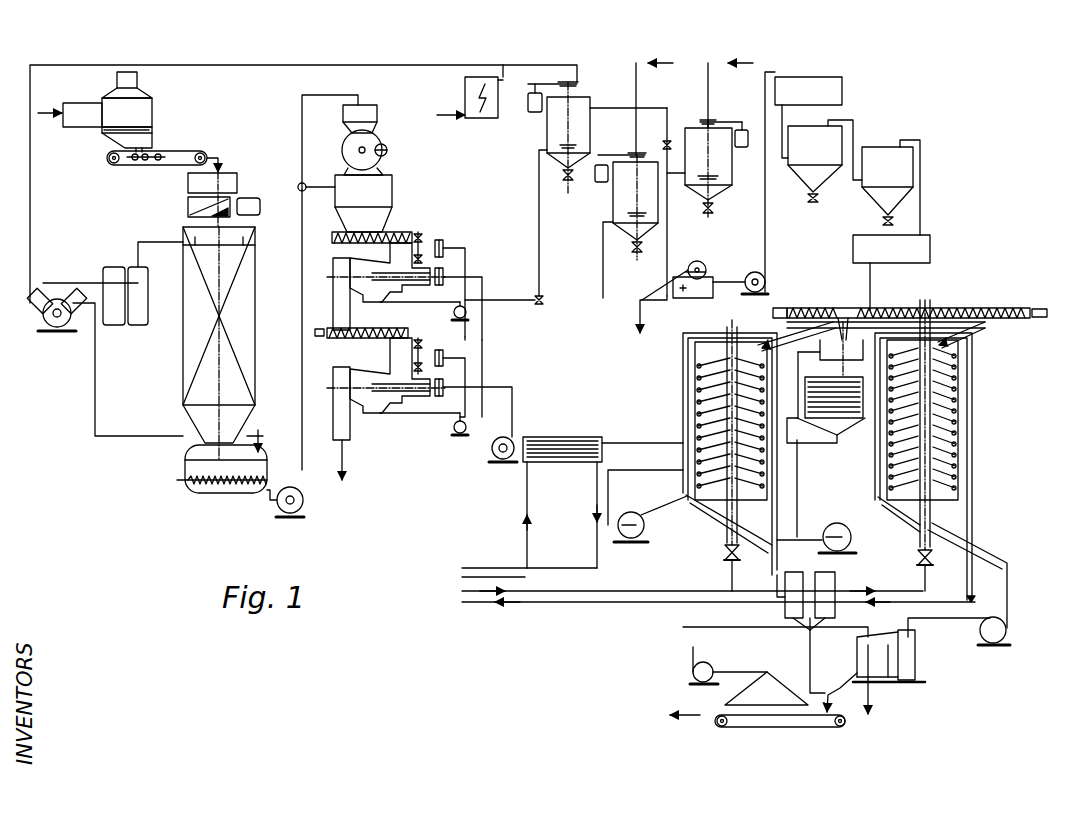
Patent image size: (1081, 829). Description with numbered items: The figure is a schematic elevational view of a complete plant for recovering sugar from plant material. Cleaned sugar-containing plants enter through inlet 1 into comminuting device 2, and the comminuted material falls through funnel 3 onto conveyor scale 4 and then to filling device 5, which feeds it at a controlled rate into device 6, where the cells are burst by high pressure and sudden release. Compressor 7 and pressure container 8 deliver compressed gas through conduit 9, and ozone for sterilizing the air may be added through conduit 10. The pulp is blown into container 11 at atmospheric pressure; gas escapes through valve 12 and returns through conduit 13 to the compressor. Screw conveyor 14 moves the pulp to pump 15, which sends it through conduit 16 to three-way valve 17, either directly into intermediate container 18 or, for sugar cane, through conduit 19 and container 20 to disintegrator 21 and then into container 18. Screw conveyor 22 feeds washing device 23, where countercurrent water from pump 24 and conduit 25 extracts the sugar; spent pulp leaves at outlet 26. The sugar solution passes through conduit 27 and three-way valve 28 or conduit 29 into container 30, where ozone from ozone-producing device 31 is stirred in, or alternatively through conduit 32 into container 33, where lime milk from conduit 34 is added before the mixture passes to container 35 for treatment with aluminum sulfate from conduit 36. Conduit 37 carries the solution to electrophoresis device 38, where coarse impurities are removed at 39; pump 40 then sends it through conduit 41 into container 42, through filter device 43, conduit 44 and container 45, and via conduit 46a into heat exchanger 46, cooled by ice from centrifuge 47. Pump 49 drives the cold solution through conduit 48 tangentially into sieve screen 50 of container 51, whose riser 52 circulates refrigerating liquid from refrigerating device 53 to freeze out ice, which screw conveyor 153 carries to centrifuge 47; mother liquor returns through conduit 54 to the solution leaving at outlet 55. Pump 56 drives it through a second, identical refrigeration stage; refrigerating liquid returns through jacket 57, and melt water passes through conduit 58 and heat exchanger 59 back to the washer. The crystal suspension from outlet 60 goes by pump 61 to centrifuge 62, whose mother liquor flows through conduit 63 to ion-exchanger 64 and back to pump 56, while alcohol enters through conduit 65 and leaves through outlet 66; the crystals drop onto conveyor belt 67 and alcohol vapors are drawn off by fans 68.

The inlet 1 is at (70, 109).
The comminuting device 2 is at (148, 107).
The funnel 3 is at (143, 137).
The conveyor scale 4 is at (152, 166).
The filling device 5 is at (238, 181).
The device for bursting cells 6 is at (244, 345).
The compressor 7 is at (64, 298).
The pressure container 8 is at (148, 305).
The conduit 9 is at (167, 242).
The conduit 10 is at (238, 65).
The container 11 is at (250, 461).
The valve 12 is at (260, 438).
The conduit 13 is at (140, 436).
The screw conveyor 14 is at (245, 488).
The pump 15 is at (303, 502).
The conduit 16 is at (301, 365).
The three-way valve 17 is at (300, 192).
The intermediate container 18 is at (385, 195).
The conduit 19 is at (301, 148).
The container 20 is at (375, 110).
The disintegrator 21 is at (372, 162).
The screw conveyor 22 is at (336, 234).
The washing device 23 is at (336, 306).
The pump 24 is at (491, 453).
The conduit 25 is at (513, 410).
The outlet 26 is at (358, 462).
The conduit 27 is at (513, 300).
The three-way valve 28 is at (540, 306).
The conduit 29 is at (546, 250).
The container 30 is at (547, 131).
The ozone-producing device 31 is at (485, 119).
The conduit 32 is at (604, 272).
The container 33 is at (613, 203).
The conduit 34 is at (638, 86).
The container 35 is at (728, 168).
The conduit 36 is at (710, 88).
The conduit 37 is at (669, 238).
The electrophoresis device 38 is at (678, 300).
The impurity removal outlet 39 is at (640, 318).
The pump 40 is at (766, 284).
The conduit 41 is at (767, 236).
The container 42 is at (810, 80).
The filter device 43 is at (798, 156).
The conduit 44 is at (921, 200).
The container 45 is at (920, 248).
The heat exchanger 46 is at (857, 432).
The conduit 46a is at (872, 289).
The centrifuge 47 is at (820, 348).
The conduit 48 is at (661, 474).
The pump 49 is at (646, 528).
The sieve screen 50 is at (702, 405).
The container 51 is at (762, 335).
The riser 52 is at (700, 378).
The refrigerating device 53 is at (584, 592).
The conduit 54 is at (798, 493).
The outlet 55 is at (787, 524).
The pump 56 is at (852, 538).
The jacket 57 is at (683, 350).
The conduit 58 is at (651, 442).
The heat exchanger 59 is at (556, 437).
The outlet 60 is at (982, 548).
The pump 61 is at (995, 645).
The centrifuge 62 is at (908, 658).
The conduit 63 is at (812, 660).
The ion-exchanger 64 is at (830, 584).
The conduit 65 is at (840, 630).
The outlet 66 is at (872, 708).
The conveyor belt 67 is at (826, 722).
The exhausts or fans 68 is at (710, 666).
The screw conveyor 153 is at (846, 306).